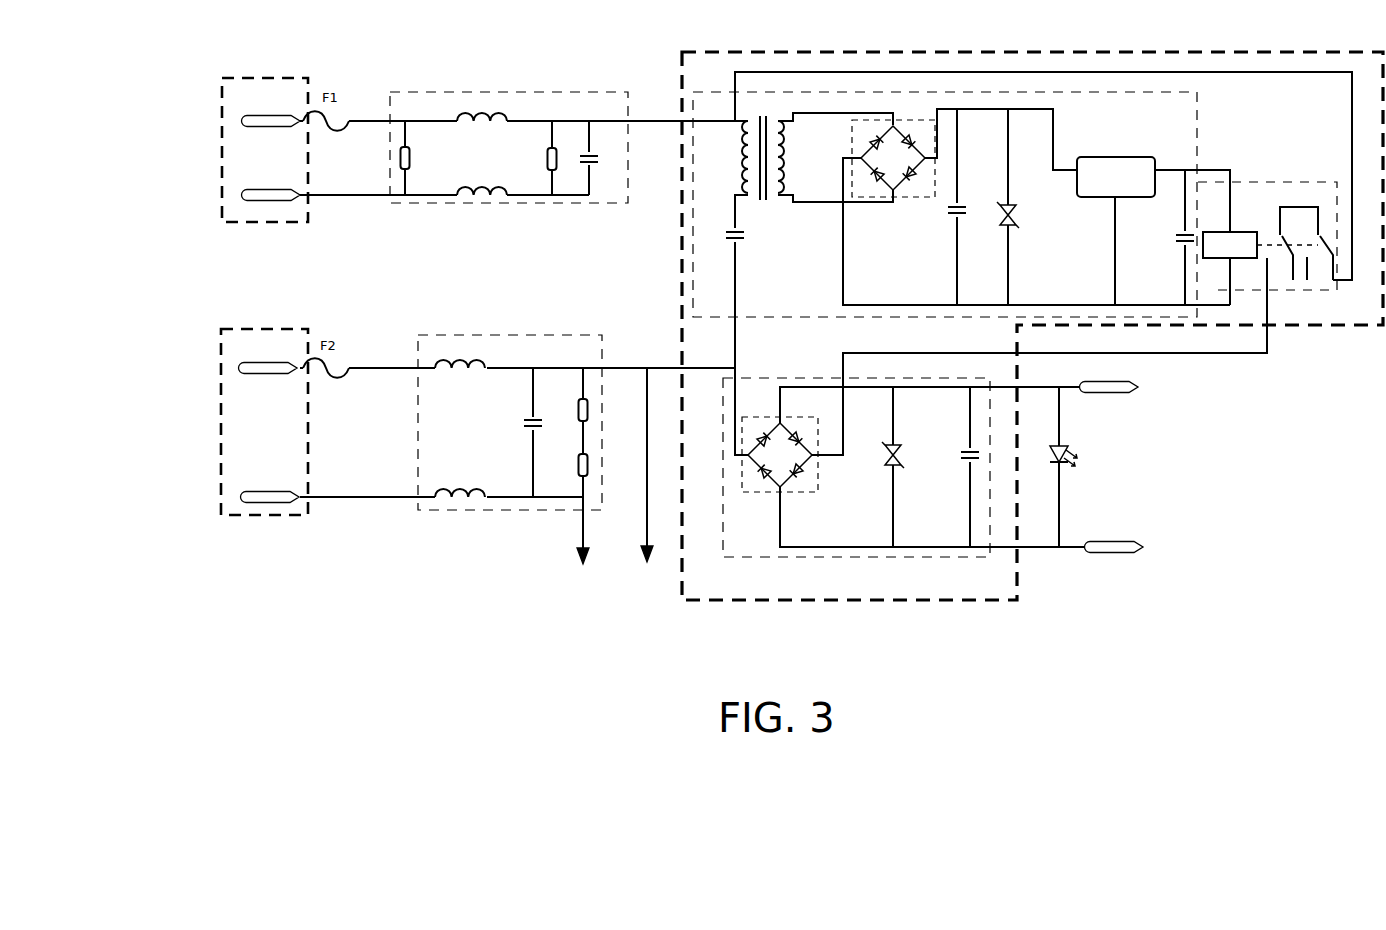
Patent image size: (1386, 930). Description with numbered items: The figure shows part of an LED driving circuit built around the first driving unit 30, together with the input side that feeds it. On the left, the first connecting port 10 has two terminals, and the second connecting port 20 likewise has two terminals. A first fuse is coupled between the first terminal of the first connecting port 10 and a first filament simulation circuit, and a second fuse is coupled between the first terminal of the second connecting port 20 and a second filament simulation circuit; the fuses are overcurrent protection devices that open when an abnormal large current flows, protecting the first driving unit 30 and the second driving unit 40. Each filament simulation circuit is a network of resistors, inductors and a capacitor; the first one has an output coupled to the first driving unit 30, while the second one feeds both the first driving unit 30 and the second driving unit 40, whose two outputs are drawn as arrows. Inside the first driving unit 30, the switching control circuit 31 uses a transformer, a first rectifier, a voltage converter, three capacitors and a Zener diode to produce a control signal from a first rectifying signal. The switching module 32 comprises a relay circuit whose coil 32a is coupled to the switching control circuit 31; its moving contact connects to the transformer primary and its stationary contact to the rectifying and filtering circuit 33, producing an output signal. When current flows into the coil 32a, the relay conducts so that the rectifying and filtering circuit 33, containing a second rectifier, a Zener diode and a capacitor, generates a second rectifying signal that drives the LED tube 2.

The first connecting port 10 is at (230, 78).
The second connecting port 20 is at (220, 368).
The first driving unit 30 is at (597, 92).
The switching control circuit 31 is at (1197, 93).
The switching module 32 is at (1310, 182).
The coil 32a is at (1222, 248).
The rectifying and filtering circuit 33 is at (784, 378).
The second driving unit 40 is at (614, 481).
The LED tube 2 is at (1092, 458).